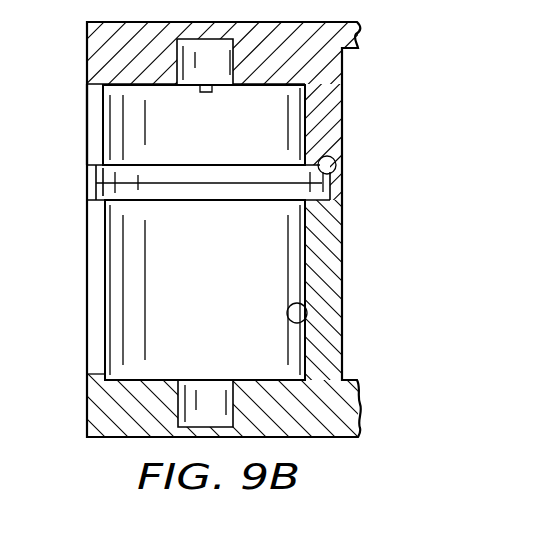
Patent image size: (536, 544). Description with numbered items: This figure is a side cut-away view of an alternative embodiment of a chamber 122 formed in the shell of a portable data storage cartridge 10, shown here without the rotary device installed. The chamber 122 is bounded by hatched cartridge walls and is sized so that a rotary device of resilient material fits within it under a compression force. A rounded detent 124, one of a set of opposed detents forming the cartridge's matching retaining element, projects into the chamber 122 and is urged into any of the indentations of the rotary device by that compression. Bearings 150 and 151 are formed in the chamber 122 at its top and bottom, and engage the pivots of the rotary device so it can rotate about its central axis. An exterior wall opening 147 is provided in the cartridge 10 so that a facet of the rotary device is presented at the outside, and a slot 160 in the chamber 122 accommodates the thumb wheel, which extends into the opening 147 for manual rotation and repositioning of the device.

The portable data storage cartridge 10 is at (363, 123).
The chamber 122 is at (307, 316).
The detent 124 is at (204, 93).
The exterior wall opening 147 is at (100, 93).
The bearing 150 is at (228, 63).
The bearing 151 is at (227, 397).
The slot 160 is at (335, 162).